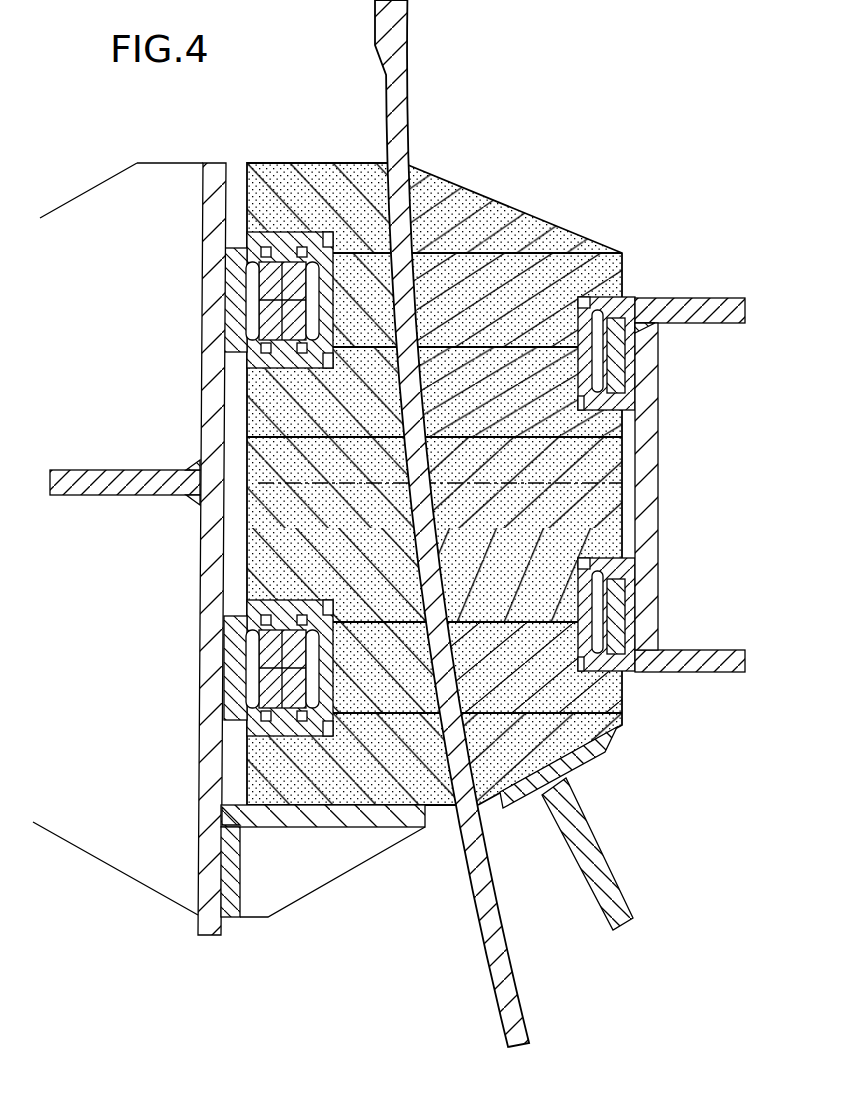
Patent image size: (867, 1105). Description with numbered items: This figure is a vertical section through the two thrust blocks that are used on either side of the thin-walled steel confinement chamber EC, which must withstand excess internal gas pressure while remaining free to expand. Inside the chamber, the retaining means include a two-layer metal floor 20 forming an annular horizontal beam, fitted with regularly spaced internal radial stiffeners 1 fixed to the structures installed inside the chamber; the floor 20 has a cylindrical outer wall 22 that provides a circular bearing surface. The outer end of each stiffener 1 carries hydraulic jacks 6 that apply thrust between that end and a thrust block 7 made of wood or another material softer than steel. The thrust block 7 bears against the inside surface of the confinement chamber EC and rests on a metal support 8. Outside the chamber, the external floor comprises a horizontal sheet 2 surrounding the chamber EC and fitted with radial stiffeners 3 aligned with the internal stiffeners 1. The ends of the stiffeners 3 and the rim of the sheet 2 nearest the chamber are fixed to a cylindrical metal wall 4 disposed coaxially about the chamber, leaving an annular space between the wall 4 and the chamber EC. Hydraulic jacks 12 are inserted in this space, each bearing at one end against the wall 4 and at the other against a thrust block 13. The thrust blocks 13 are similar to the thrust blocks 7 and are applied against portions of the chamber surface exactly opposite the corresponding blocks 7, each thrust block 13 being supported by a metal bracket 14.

The internal radial stiffener 1 is at (701, 426).
The horizontal sheet 2 is at (108, 483).
The radial stiffener 3 is at (128, 788).
The cylindrical metal wall 4 is at (208, 868).
The hydraulic jack 6 is at (613, 322).
The thrust block 7 is at (488, 258).
The metal support 8 is at (588, 858).
The hydraulic jack 12 is at (293, 272).
The thrust block 13 is at (400, 767).
The metal bracket 14 is at (315, 815).
The two-layer metal floor 20 is at (744, 305).
The cylindrical outer wall 22 is at (653, 417).
The confinement chamber EC is at (480, 915).